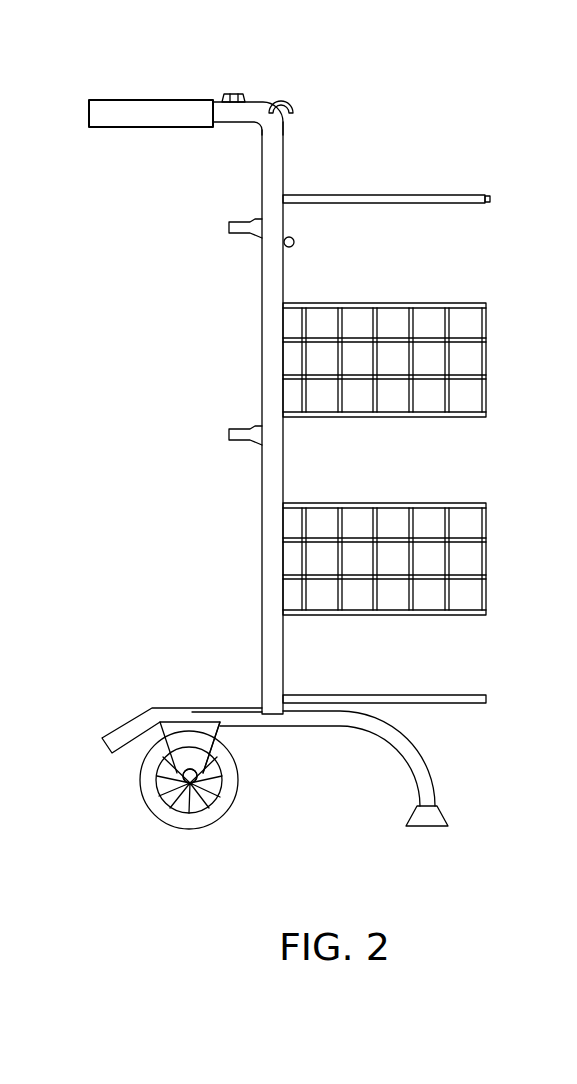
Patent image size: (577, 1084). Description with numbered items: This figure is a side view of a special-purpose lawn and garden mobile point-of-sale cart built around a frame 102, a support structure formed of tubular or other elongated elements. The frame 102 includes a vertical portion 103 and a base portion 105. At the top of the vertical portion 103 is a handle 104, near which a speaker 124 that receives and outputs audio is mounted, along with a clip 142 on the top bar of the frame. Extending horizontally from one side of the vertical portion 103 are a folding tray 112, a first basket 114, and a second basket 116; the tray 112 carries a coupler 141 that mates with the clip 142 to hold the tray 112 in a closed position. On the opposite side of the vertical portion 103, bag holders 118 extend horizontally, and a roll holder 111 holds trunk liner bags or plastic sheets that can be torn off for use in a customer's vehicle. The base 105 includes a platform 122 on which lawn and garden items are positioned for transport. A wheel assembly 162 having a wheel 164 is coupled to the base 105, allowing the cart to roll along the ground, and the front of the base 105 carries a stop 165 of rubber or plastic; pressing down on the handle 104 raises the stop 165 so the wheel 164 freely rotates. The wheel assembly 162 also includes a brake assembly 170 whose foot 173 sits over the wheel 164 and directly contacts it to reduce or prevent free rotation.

The frame 102 is at (284, 138).
The vertical portion 103 is at (283, 290).
The handle 104 is at (153, 100).
The base portion 105 is at (342, 727).
The roll holder 111 is at (295, 242).
The folding tray 112 is at (425, 195).
The first basket 114 is at (457, 303).
The second basket 116 is at (467, 503).
The bag holder 118 is at (243, 222).
The platform 122 is at (476, 695).
The speaker 124 is at (229, 94).
The coupler 141 is at (491, 199).
The clip 142 is at (284, 102).
The wheel assembly 162 is at (215, 732).
The wheel 164 is at (143, 797).
The stop 165 is at (425, 818).
The brake assembly 170 is at (192, 722).
The foot 173 is at (110, 737).